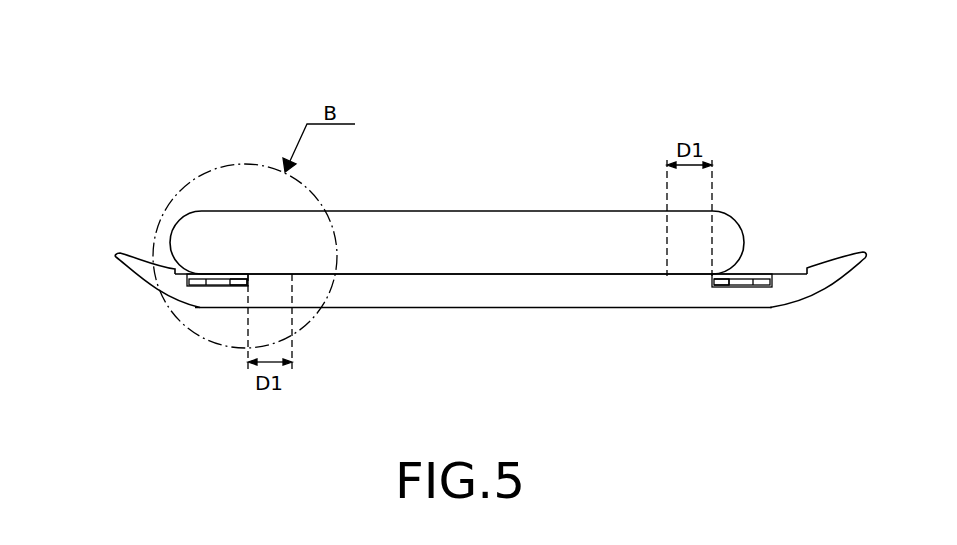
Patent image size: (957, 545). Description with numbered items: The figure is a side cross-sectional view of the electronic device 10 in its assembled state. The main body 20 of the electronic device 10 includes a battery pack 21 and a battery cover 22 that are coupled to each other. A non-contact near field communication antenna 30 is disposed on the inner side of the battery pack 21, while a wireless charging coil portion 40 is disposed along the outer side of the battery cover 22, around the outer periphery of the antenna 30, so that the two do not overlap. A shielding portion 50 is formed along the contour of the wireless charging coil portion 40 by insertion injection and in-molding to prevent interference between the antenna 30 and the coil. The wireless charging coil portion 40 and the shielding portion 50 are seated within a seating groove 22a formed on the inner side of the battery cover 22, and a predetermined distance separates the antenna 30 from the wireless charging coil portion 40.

The electronic device 10 is at (747, 92).
The main body 20 is at (470, 237).
The battery pack 21 is at (192, 224).
The battery cover 22 is at (155, 266).
The seating groove 22a is at (237, 288).
The non-contact near field communication antenna 30 is at (460, 274).
The wireless charging coil portion 40 is at (217, 287).
The shielding portion 50 is at (197, 287).